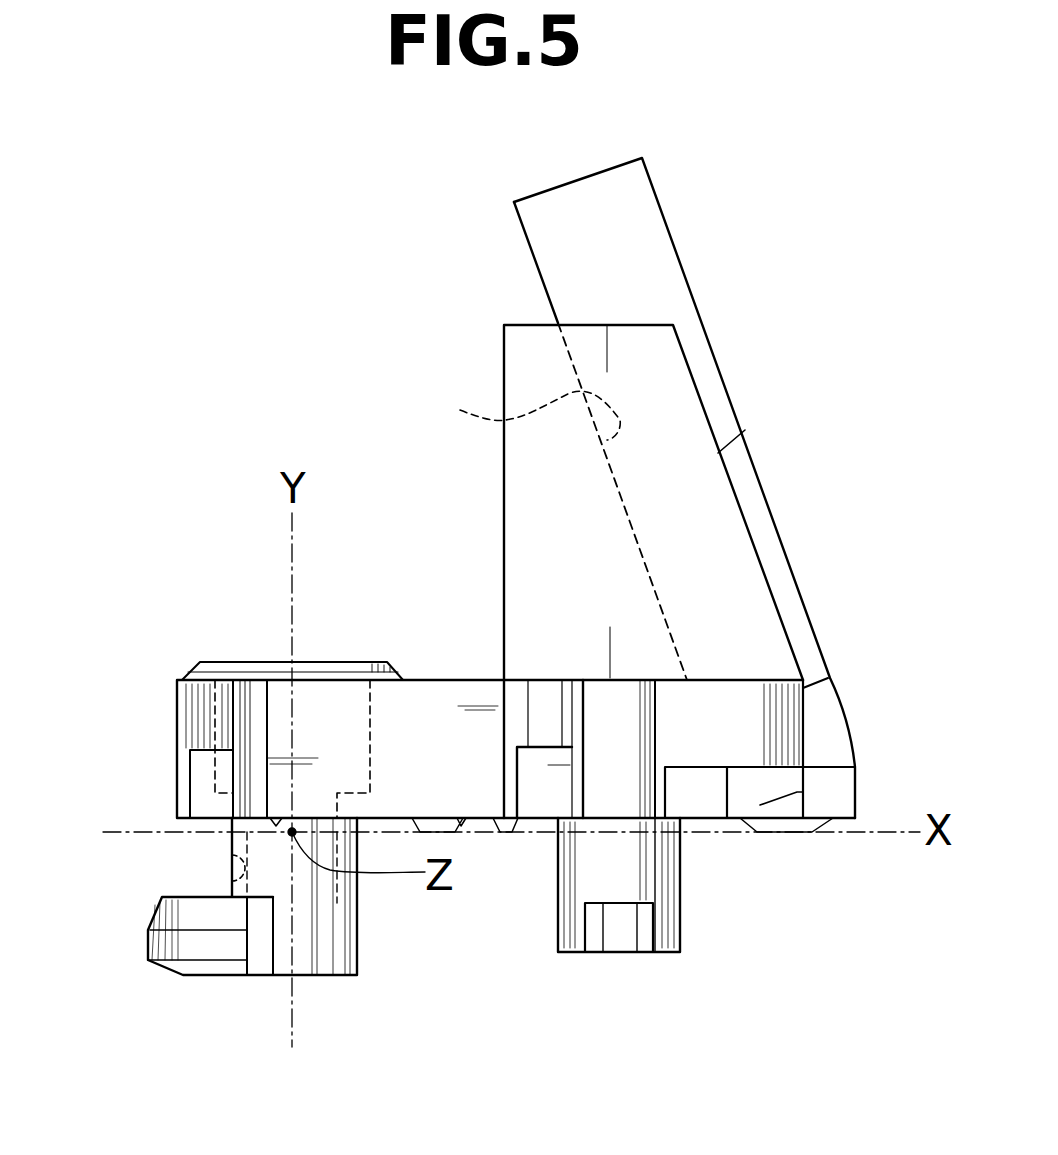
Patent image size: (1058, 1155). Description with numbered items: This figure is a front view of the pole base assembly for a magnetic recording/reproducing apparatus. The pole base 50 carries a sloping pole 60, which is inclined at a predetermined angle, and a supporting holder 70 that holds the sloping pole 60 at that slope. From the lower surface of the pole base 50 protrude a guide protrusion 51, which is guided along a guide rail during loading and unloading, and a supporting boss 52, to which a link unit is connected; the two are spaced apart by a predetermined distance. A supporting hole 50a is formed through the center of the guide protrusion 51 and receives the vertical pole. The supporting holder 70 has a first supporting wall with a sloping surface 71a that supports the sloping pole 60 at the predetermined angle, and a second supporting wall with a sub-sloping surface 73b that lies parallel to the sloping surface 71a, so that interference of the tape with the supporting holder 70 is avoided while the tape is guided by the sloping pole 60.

The pole base 50 is at (187, 712).
The supporting hole 50a is at (227, 862).
The guide protrusion 51 is at (320, 975).
The supporting boss 52 is at (678, 915).
The sloping pole 60 is at (673, 238).
The supporting holder 70 is at (503, 502).
The sloping surface 71a is at (508, 409).
The sub-sloping surface 73b is at (745, 430).